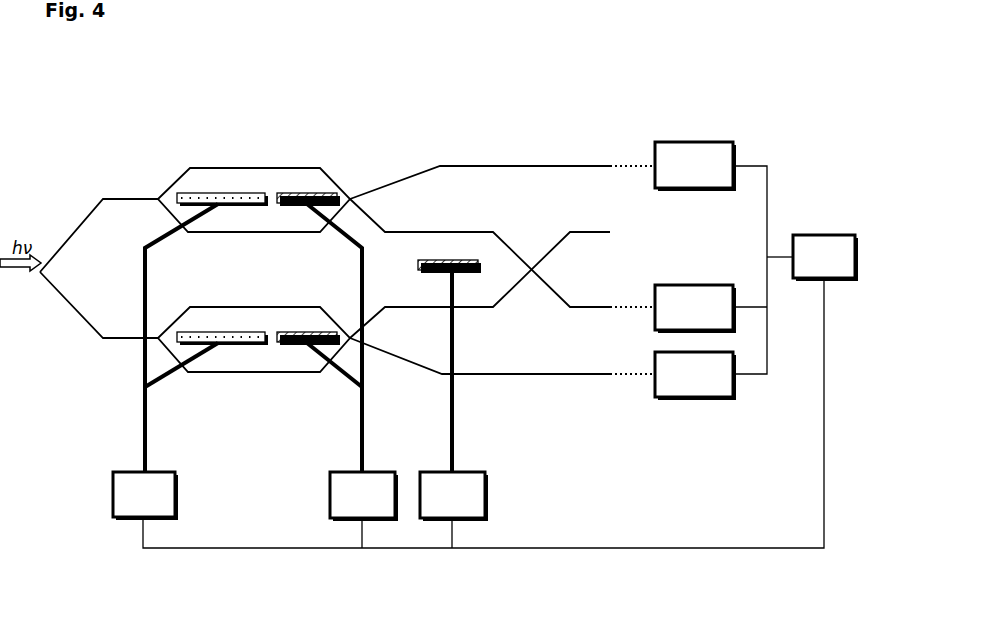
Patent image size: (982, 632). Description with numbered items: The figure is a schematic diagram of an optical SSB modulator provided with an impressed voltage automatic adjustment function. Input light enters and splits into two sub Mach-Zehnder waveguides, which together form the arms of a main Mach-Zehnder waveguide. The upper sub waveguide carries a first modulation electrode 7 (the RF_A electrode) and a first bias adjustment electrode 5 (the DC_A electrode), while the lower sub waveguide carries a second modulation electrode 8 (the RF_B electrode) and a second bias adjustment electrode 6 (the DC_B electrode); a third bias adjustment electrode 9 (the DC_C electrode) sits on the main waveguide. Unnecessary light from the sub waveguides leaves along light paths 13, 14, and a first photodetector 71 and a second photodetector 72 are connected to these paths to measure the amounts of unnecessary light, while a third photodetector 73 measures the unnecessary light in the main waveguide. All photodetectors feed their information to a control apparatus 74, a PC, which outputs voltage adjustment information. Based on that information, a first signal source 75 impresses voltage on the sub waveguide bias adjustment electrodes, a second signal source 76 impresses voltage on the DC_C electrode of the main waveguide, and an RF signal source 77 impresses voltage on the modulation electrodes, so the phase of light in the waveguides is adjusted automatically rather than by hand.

The first bias adjustment electrode 5 is at (300, 193).
The second bias adjustment electrode 6 is at (305, 345).
The first modulation electrode 7 is at (218, 193).
The second modulation electrode 8 is at (218, 343).
The third bias adjustment electrode 9 is at (452, 260).
The light path for unnecessary light 13 is at (498, 166).
The light path for unnecessary light 14 is at (592, 374).
The first photodetector 71 is at (690, 142).
The second photodetector 72 is at (682, 397).
The third photodetector 73 is at (682, 285).
The control apparatus 74 is at (823, 233).
The first signal source 75 is at (365, 472).
The second signal source 76 is at (455, 472).
The RF signal source 77 is at (125, 472).